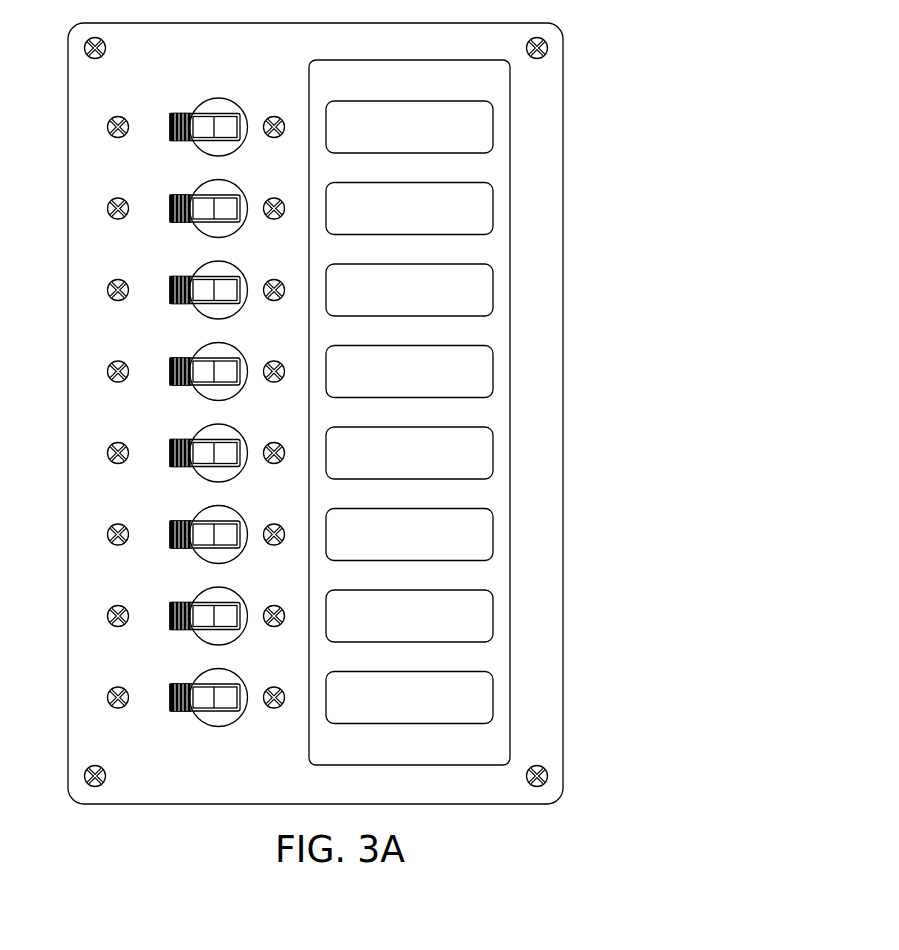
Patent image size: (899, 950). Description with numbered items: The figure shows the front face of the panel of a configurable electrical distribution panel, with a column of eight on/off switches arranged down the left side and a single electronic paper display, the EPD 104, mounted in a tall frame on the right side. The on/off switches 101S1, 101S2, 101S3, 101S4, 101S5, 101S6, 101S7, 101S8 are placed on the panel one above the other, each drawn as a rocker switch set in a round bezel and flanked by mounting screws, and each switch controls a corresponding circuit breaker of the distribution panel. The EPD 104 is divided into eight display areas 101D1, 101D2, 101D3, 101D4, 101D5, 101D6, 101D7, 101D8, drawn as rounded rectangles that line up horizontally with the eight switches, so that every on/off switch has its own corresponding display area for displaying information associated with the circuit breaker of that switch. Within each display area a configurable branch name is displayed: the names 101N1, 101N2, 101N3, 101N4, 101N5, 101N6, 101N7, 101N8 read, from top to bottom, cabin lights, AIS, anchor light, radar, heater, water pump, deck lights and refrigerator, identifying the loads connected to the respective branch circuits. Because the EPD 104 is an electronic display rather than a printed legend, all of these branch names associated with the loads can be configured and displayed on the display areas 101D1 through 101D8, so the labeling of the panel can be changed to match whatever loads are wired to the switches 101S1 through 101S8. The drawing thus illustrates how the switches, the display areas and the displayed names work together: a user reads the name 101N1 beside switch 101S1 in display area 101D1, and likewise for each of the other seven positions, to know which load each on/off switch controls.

The EPD 104 is at (511, 99).
The on/off switch 101S1 is at (186, 124).
The on/off switch 101S2 is at (186, 206).
The on/off switch 101S3 is at (186, 287).
The on/off switch 101S4 is at (186, 369).
The on/off switch 101S5 is at (186, 450).
The on/off switch 101S6 is at (186, 532).
The on/off switch 101S7 is at (186, 613).
The on/off switch 101S8 is at (186, 695).
The name label 1 (cabin lights) 101N1 is at (467, 128).
The name label 2 (AIS) 101N2 is at (425, 209).
The name label 3 (anchor light) 101N3 is at (470, 290).
The name label 4 (radar) 101N4 is at (440, 372).
The name label 5 (heater) 101N5 is at (445, 454).
The name label 6 (water pump) 101N6 is at (467, 535).
The name label 7 (deck lights) 101N7 is at (465, 616).
The name label 8 (refrigerator) 101N8 is at (474, 698).
The display area 1 101D1 is at (494, 147).
The display area 2 101D2 is at (494, 223).
The display area 3 101D3 is at (494, 310).
The display area 4 101D4 is at (494, 395).
The display area 5 101D5 is at (494, 473).
The display area 6 101D6 is at (494, 553).
The display area 7 101D7 is at (494, 640).
The display area 8 101D8 is at (494, 718).